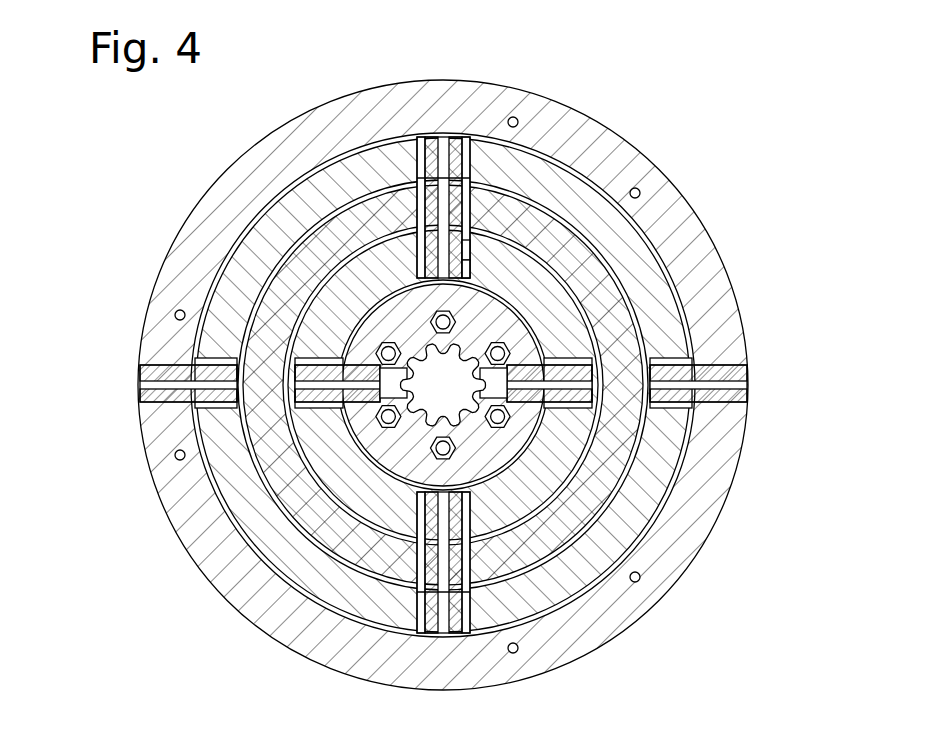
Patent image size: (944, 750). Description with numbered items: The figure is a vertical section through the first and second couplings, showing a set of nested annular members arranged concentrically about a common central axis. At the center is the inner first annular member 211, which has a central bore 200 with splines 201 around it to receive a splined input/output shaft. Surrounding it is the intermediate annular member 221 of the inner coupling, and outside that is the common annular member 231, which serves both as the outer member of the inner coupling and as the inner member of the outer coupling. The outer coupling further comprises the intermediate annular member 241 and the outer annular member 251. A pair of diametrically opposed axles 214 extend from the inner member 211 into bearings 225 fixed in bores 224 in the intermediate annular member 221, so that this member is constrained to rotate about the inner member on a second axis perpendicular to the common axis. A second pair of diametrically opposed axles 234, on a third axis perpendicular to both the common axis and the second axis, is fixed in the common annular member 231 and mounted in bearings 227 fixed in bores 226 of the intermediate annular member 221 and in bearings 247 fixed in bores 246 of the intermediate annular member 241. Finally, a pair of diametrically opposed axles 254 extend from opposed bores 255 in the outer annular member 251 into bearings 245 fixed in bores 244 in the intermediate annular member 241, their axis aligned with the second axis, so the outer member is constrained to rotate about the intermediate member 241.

The central bore 200 is at (438, 362).
The splines 201 is at (388, 332).
The inner first annular member 211 is at (197, 410).
The axles 214 is at (353, 412).
The intermediate annular member 221 is at (337, 316).
The bores 224 is at (418, 520).
The bearings 225 is at (420, 505).
The bores 226 is at (470, 250).
The bearings 227 is at (470, 268).
The common annular member 231 is at (303, 288).
The axles 234 is at (437, 160).
The intermediate annular member 241 is at (627, 243).
The bores 244 is at (688, 433).
The bearings 245 is at (690, 405).
The bores 246 is at (466, 155).
The bearings 247 is at (488, 146).
The outer annular member 251 is at (655, 208).
The axles 254 is at (730, 393).
The bores 255 is at (735, 360).